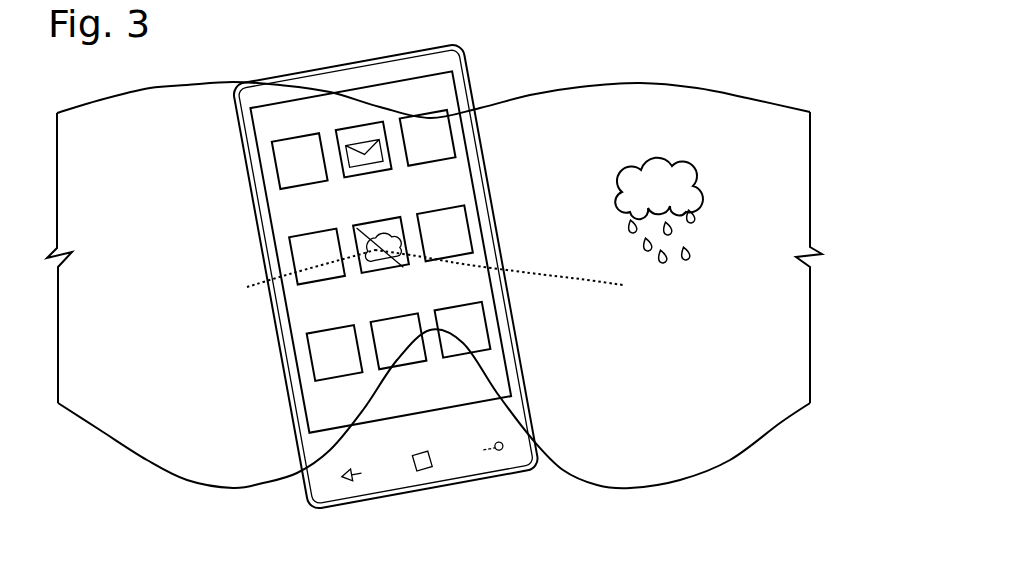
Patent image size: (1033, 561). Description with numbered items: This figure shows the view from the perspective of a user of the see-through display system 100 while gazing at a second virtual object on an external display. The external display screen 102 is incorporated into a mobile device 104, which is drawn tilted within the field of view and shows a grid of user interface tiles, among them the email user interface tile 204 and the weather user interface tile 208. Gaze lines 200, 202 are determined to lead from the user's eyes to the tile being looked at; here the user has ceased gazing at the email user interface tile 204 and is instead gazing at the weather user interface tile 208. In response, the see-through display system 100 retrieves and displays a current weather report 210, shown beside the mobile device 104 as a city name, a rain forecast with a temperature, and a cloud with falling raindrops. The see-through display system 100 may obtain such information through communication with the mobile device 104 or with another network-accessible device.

The see-through display system 100 is at (631, 83).
The external display screen 102 is at (430, 97).
The mobile device 104 is at (357, 58).
The gaze line 200 is at (251, 286).
The gaze line 202 is at (537, 271).
The email user interface tile 204 is at (348, 138).
The weather user interface tile 208 is at (385, 230).
The current weather report 210 is at (667, 119).